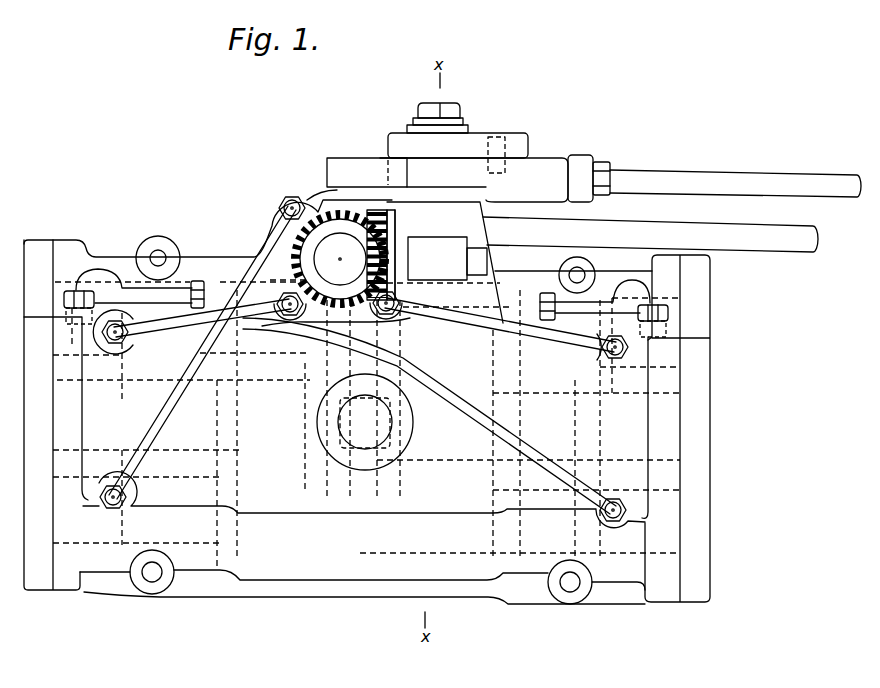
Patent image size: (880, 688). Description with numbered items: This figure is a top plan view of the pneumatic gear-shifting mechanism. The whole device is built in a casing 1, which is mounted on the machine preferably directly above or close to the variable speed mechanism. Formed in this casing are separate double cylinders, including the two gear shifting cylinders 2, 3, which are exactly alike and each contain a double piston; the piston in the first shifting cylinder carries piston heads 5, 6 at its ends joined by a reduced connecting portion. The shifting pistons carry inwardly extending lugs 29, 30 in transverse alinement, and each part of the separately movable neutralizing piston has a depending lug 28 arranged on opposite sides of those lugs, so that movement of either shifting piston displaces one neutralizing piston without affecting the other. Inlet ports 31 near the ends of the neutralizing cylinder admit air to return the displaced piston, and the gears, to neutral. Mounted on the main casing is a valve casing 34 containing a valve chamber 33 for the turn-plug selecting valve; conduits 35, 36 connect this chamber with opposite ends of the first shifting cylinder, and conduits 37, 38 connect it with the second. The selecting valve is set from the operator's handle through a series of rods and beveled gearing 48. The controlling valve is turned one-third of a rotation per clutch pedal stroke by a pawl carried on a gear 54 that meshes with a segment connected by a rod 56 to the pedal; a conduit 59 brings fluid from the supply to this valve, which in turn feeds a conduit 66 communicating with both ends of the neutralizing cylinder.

The casing 1 is at (668, 277).
The shifting cylinder 2 is at (110, 533).
The shifting cylinder 3 is at (527, 296).
The piston head 5 is at (530, 550).
The piston head 6 is at (195, 547).
The depending lug 28 is at (335, 424).
The lug 29 is at (330, 402).
The lug 30 is at (330, 445).
The inlet port 31 is at (68, 340).
The valve chamber 33 is at (327, 215).
The valve casing 34 is at (388, 237).
The conduit 35 is at (524, 443).
The conduit 36 is at (155, 412).
The conduit 37 is at (452, 320).
The conduit 38 is at (177, 323).
The rods and beveled gearing 48 is at (370, 230).
The gear 54 is at (327, 167).
The rod 56 is at (657, 177).
The conduit 59 is at (728, 232).
The conduit 66 is at (130, 288).